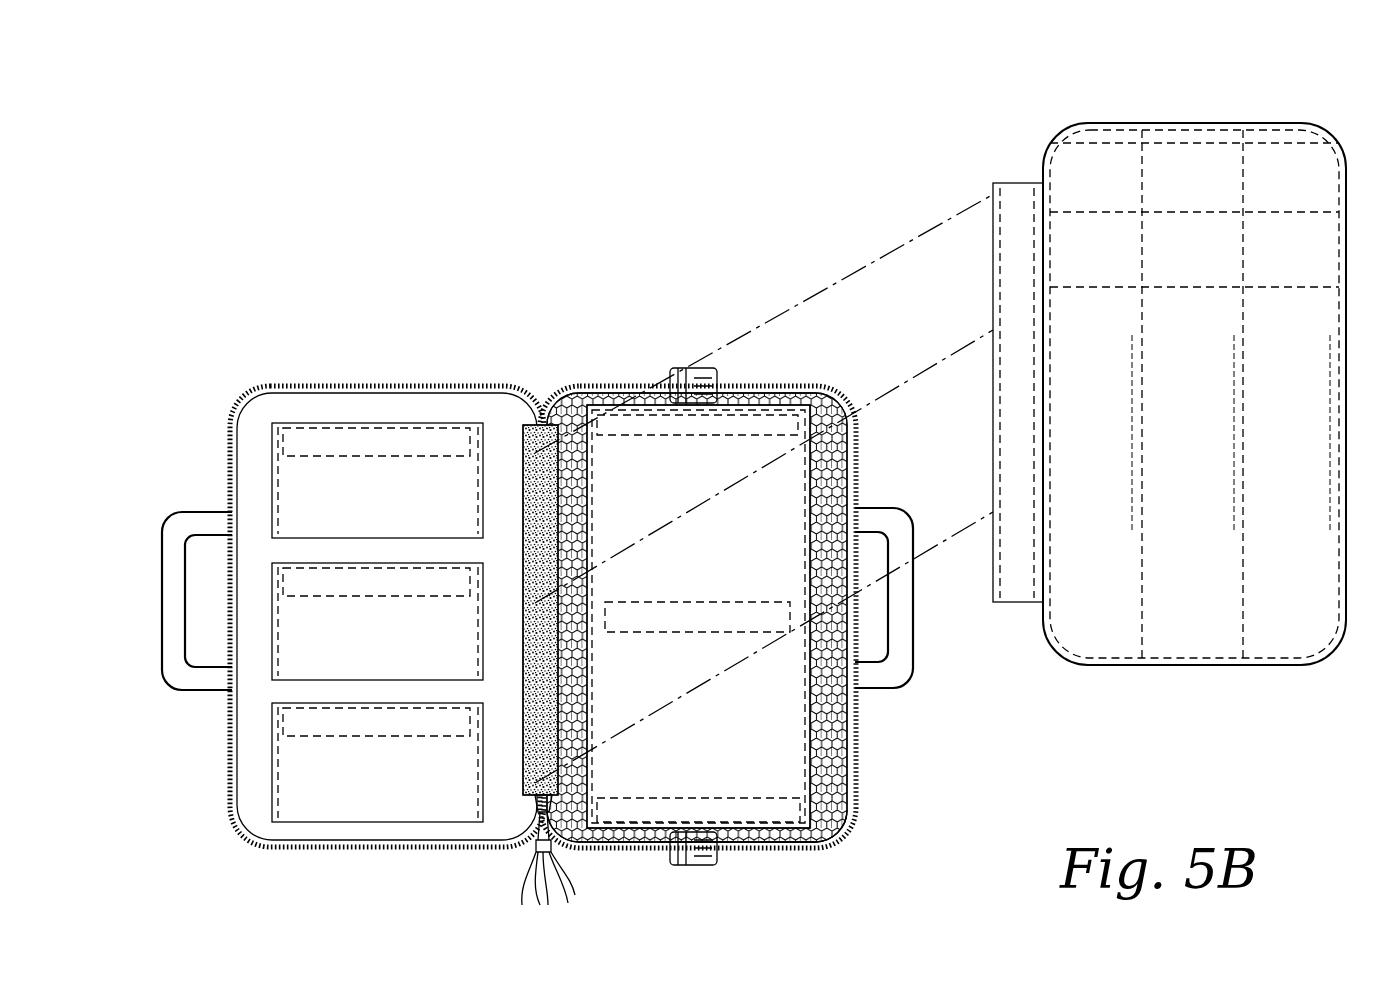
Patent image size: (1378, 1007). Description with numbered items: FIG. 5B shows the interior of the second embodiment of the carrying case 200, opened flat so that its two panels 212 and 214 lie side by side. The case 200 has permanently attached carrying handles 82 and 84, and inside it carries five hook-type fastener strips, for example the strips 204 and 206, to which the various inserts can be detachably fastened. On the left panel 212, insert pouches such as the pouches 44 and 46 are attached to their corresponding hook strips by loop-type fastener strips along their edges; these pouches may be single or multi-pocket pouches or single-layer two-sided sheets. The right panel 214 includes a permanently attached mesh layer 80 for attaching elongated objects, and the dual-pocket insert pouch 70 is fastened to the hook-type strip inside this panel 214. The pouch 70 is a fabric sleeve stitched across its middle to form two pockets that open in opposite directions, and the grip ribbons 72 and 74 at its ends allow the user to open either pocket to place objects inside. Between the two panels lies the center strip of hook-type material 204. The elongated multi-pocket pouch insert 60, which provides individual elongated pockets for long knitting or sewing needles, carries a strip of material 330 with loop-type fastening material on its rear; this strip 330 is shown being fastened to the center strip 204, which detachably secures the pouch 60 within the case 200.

The carrying case 200 is at (270, 318).
The panel 212 is at (333, 852).
The hook-type fastener strip 206 is at (370, 435).
The insert pouch 44 is at (272, 645).
The insert pouch 46 is at (292, 785).
The center strip of hook-type material 204 is at (523, 425).
The carrying handle 82 is at (205, 520).
The carrying handle 84 is at (905, 668).
The mesh layer 80 is at (845, 800).
The dual-pocket insert pouch 70 is at (619, 679).
The grip ribbon 74 is at (703, 368).
The grip ribbon 72 is at (703, 865).
The panel 214 is at (783, 837).
The strip of material 330 is at (1017, 192).
The elongated multi-pocket pouch insert 60 is at (1127, 125).